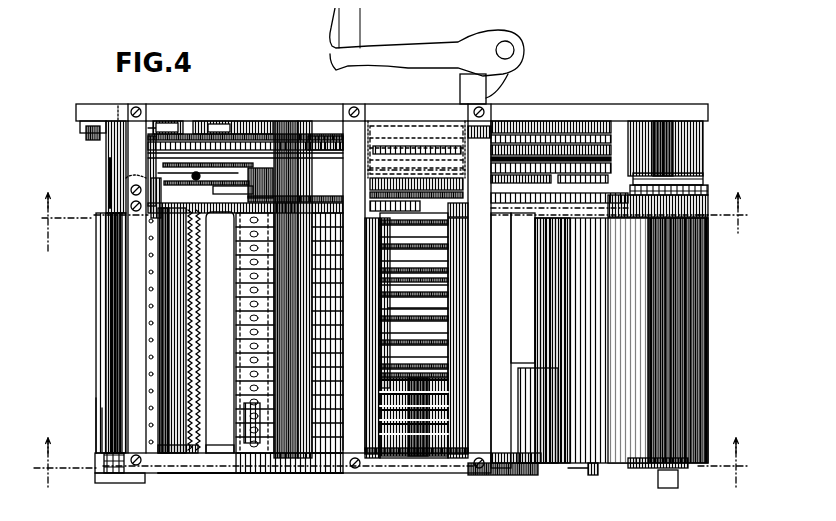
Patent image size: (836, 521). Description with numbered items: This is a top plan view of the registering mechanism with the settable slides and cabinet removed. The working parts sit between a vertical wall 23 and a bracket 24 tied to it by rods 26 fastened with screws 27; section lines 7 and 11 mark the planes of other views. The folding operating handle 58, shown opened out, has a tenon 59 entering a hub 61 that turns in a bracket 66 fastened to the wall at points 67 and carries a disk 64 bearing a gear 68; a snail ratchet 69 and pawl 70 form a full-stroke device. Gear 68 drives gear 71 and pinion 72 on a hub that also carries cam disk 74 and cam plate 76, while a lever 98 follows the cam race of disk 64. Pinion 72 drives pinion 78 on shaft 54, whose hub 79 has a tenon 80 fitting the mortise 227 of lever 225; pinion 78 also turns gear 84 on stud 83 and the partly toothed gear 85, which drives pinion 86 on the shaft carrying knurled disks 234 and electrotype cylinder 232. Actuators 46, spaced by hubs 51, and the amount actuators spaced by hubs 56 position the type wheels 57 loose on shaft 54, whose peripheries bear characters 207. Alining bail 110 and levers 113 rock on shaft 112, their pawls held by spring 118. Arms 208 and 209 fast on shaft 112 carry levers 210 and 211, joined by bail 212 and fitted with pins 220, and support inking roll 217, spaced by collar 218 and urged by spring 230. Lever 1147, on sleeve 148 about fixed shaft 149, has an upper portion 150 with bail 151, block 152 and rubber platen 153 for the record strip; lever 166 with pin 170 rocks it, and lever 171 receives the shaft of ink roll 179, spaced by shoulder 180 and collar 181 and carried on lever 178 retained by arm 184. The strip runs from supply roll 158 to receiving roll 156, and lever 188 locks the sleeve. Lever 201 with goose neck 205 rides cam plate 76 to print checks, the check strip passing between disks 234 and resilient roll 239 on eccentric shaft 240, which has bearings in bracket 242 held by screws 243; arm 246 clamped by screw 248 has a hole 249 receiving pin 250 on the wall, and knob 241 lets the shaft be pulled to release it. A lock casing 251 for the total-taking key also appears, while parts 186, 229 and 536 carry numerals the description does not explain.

The section line 7- 7 is at (391, 453).
The section line 11- 11 is at (399, 213).
The vertical wall 23 is at (195, 104).
The vertically extending bracket 24 is at (324, 466).
The rods 26 is at (122, 104).
The screws 27 is at (132, 100).
The actuators 46 is at (440, 370).
The hubs 51 is at (440, 386).
The shaft 54 is at (414, 328).
The hubs 56 is at (392, 296).
The type wheels 57 is at (228, 272).
The operating handle 58 is at (400, 36).
The tenon 59 is at (500, 82).
The hub 61 is at (508, 118).
The disk 64 is at (608, 104).
The bracket 66 is at (408, 128).
The points 67 is at (386, 108).
The gear 68 is at (479, 135).
The snail ratchet 69 is at (512, 168).
The pawl 70 is at (572, 170).
The gear 71 is at (325, 135).
The pinion 72 is at (392, 130).
The disk 74 is at (440, 176).
The cam plate 76 is at (414, 200).
The pinion 78 is at (270, 114).
The hub 79 is at (219, 128).
The tenon 80 is at (294, 114).
The stud 83 is at (178, 116).
The gear 84 is at (167, 126).
The gear 85 is at (198, 118).
The pinion 86 is at (130, 120).
The lever 98 is at (540, 118).
The bail 110 is at (219, 458).
The shaft 112 is at (322, 114).
The levers 113 is at (326, 222).
The spring 118 is at (186, 252).
The sleeve 148 is at (672, 178).
The fixed shaft 149 is at (640, 125).
The upper portion 150 is at (560, 208).
The bail 151 is at (520, 330).
The block 152 is at (488, 288).
The rubber platen 153 is at (485, 262).
The receiving roll 156 is at (575, 468).
The supply roll 158 is at (690, 274).
The lever 166 is at (440, 186).
The pin 170 is at (540, 170).
The lever 171 is at (500, 212).
The lever 178 is at (496, 468).
The roll 179 is at (455, 244).
The shoulder 180 is at (431, 448).
The collar 181 is at (452, 208).
The arm 184 is at (552, 462).
The wheel 186 is at (500, 322).
The lever 188 is at (692, 168).
The lever 201 is at (220, 332).
The goose neck portion 205 is at (326, 196).
The characters 207 is at (228, 310).
The arm 208 is at (233, 186).
The arm 209 is at (188, 466).
The lever 210 is at (178, 458).
The lever 211 is at (150, 172).
The bail 212 is at (142, 176).
The roll 217 is at (152, 415).
The collar 218 is at (148, 216).
The pin 220 is at (182, 163).
The lever 225 is at (206, 168).
The mortise 227 is at (240, 150).
The bar 229 is at (206, 176).
The spring 230 is at (330, 180).
The cylinder 232 is at (104, 366).
The disks 234 is at (92, 236).
The resilient roll 239 is at (92, 414).
The shaft 240 is at (110, 190).
The knob 241 is at (96, 476).
The bracket 242 is at (86, 207).
The screws 243 is at (122, 182).
The arm 246 is at (82, 125).
The screw 248 is at (80, 116).
The hole 249 is at (104, 130).
The pin 250 is at (102, 96).
The lock casing 251 is at (101, 164).
The type 536 is at (236, 404).
The lever 1147 is at (676, 198).